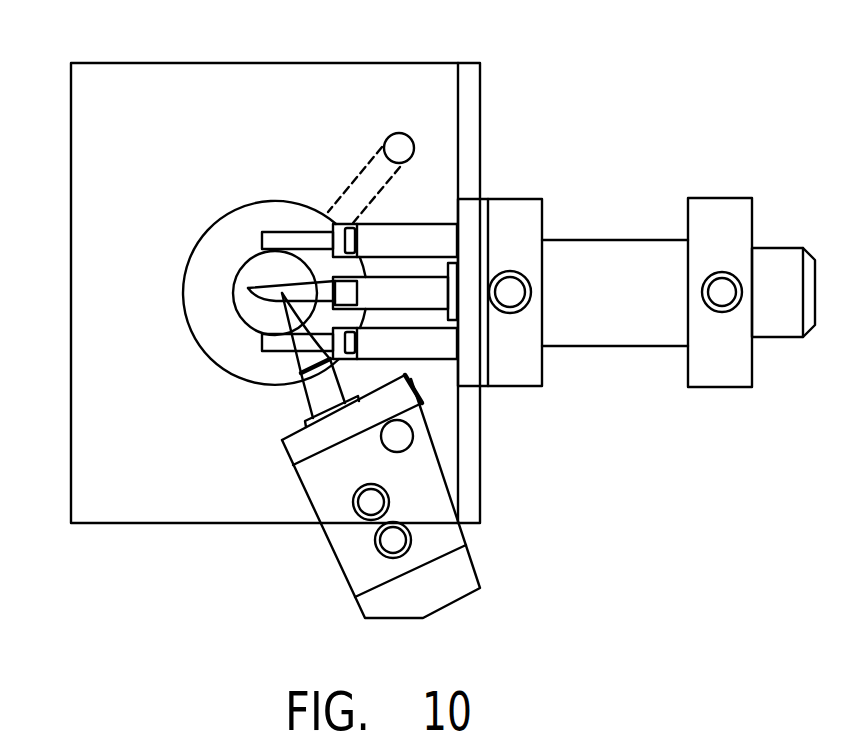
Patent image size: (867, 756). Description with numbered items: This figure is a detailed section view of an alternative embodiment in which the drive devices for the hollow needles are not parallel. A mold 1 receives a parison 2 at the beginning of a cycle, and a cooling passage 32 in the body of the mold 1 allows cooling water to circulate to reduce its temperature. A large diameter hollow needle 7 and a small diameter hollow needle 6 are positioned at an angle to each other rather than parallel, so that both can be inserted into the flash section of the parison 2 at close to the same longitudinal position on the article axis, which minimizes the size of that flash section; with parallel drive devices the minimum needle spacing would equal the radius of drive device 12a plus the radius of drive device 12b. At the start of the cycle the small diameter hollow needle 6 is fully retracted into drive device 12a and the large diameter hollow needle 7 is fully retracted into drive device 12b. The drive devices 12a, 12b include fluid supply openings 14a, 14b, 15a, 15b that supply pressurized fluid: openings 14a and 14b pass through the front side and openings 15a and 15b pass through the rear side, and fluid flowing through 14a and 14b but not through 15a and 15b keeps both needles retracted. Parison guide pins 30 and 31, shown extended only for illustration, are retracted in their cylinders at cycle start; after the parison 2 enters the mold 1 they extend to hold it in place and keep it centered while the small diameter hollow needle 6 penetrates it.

The mold 1 is at (280, 63).
The parison 2 is at (243, 308).
The small diameter hollow needle 6 is at (266, 351).
The large diameter hollow needle 7 is at (247, 288).
The parison guide pin 30 is at (280, 237).
The parison guide pin 31 is at (262, 347).
The cooling passage 32 is at (375, 165).
The drive device 12a is at (446, 483).
The drive device 12b is at (512, 198).
The fluid supply opening 14a is at (371, 504).
The fluid supply opening 15a is at (393, 542).
The fluid supply opening 14b is at (512, 290).
The fluid supply opening 15b is at (726, 292).